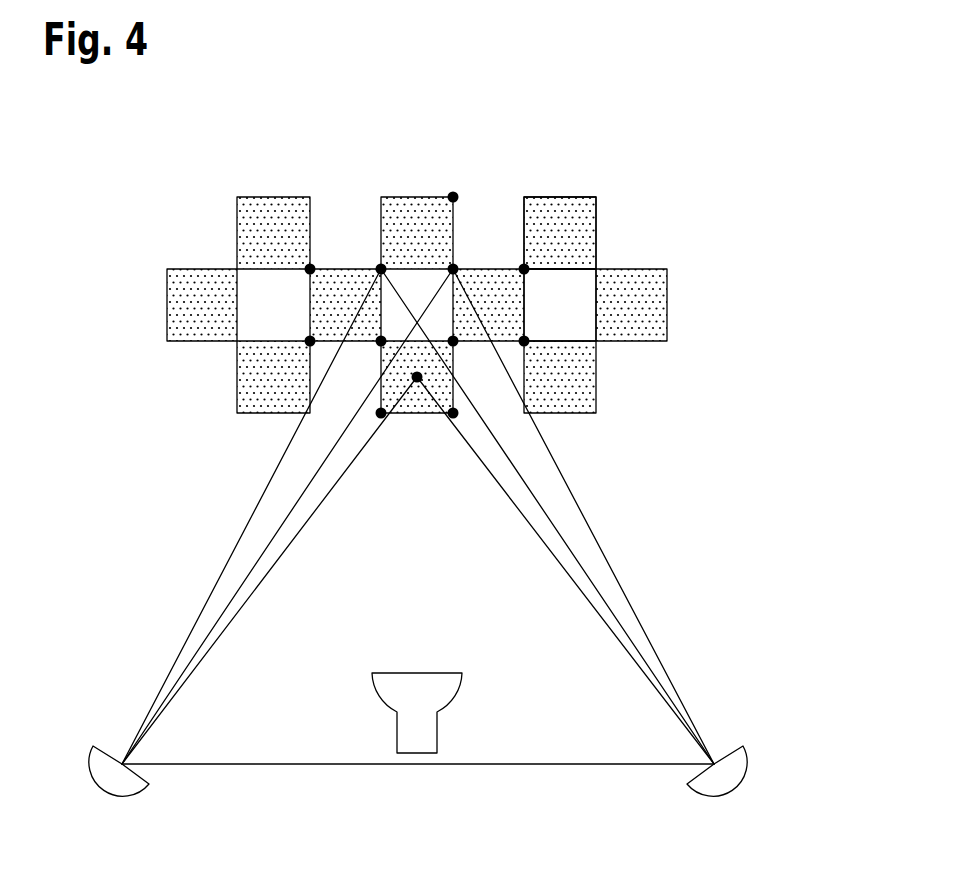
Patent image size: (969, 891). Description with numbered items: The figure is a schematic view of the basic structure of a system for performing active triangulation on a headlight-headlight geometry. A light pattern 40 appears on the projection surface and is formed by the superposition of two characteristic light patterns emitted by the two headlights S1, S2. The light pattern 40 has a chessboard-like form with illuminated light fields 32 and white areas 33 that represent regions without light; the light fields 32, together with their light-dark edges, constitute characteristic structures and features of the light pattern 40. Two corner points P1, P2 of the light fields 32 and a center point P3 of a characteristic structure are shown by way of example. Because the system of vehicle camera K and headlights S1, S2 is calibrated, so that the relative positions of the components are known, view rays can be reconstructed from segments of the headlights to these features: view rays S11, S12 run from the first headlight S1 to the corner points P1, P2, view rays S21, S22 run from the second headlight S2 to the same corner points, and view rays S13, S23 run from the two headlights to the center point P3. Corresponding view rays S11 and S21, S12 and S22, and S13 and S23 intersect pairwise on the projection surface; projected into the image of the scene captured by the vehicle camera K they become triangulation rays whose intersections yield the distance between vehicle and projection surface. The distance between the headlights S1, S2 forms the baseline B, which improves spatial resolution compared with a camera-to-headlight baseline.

The light pattern 40 is at (672, 106).
The light fields 32 is at (558, 202).
The white areas 33 is at (582, 283).
The corner point P1 is at (381, 269).
The corner point P2 is at (453, 269).
The center point P3 is at (417, 377).
The view ray S11 is at (226, 563).
The view ray S12 is at (292, 510).
The view ray S13 is at (289, 545).
The view ray S21 is at (543, 505).
The view ray S22 is at (622, 587).
The view ray S23 is at (540, 540).
The baseline B is at (490, 764).
The vehicle camera K is at (426, 713).
The first headlight S1 is at (109, 795).
The second headlight S2 is at (724, 802).